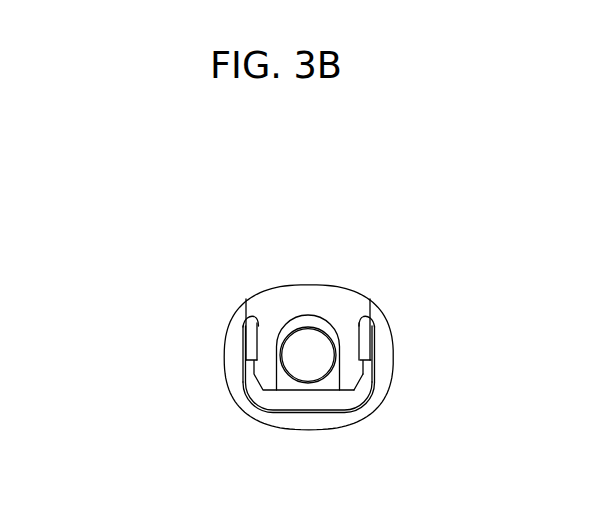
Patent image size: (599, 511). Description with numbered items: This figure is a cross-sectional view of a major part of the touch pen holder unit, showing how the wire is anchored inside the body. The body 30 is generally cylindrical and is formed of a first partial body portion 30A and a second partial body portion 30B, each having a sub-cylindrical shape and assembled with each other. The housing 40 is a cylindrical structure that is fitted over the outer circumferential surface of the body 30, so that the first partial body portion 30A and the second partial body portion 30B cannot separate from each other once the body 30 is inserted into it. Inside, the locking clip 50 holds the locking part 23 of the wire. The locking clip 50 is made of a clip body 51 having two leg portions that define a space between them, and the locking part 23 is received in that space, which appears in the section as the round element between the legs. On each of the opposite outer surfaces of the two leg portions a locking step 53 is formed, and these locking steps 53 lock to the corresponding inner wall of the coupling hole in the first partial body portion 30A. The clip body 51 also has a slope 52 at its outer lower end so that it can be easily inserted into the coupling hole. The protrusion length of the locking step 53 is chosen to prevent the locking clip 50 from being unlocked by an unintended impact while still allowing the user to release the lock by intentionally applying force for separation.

The locking part 23 is at (298, 355).
The body 30 is at (102, 362).
The first partial body portion 30A is at (245, 347).
The second partial body portion 30B is at (288, 400).
The housing 40 is at (235, 377).
The locking clip 50 is at (333, 298).
The clip body 51 is at (268, 335).
The slope 52 is at (362, 381).
The locking step 53 is at (360, 357).